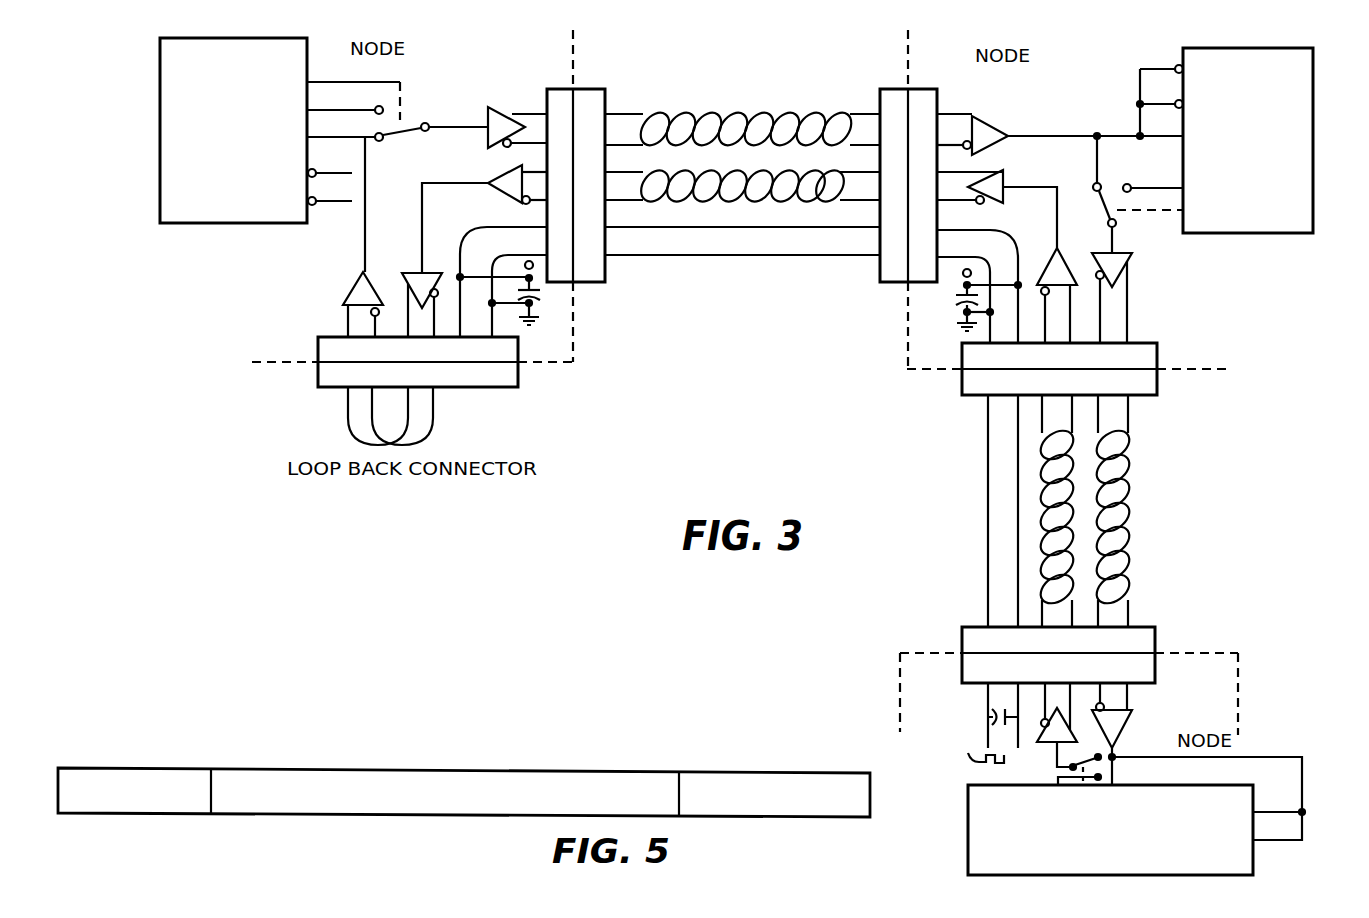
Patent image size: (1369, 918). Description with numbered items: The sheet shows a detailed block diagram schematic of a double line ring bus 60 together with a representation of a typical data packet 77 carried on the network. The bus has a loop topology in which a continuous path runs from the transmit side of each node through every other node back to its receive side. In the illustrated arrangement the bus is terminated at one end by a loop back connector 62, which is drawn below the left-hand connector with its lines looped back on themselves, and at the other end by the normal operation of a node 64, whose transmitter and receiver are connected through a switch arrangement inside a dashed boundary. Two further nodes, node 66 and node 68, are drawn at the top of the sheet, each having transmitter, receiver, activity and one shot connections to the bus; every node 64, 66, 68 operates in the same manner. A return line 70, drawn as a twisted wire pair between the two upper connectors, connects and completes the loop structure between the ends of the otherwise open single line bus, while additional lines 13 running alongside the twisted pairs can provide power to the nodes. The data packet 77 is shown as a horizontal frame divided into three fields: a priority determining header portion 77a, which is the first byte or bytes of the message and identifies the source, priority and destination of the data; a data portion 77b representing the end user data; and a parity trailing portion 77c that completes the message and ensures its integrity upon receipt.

In FIG. 3, the lines 13 is at (696, 266).
In FIG. 3, the double line ring bus 60 is at (630, 402).
In FIG. 3, the loop back connector 62 is at (482, 387).
In FIG. 3, the node 64 is at (1246, 710).
In FIG. 3, the node 66 is at (1205, 233).
In FIG. 3, the node 68 is at (215, 223).
In FIG. 3, the return line 70 is at (697, 199).
In FIG. 5, the data packet 77 is at (302, 750).
In FIG. 5, the header portion 77a is at (143, 766).
In FIG. 5, the data portion 77b is at (493, 772).
In FIG. 5, the parity trailing portion 77c is at (749, 772).